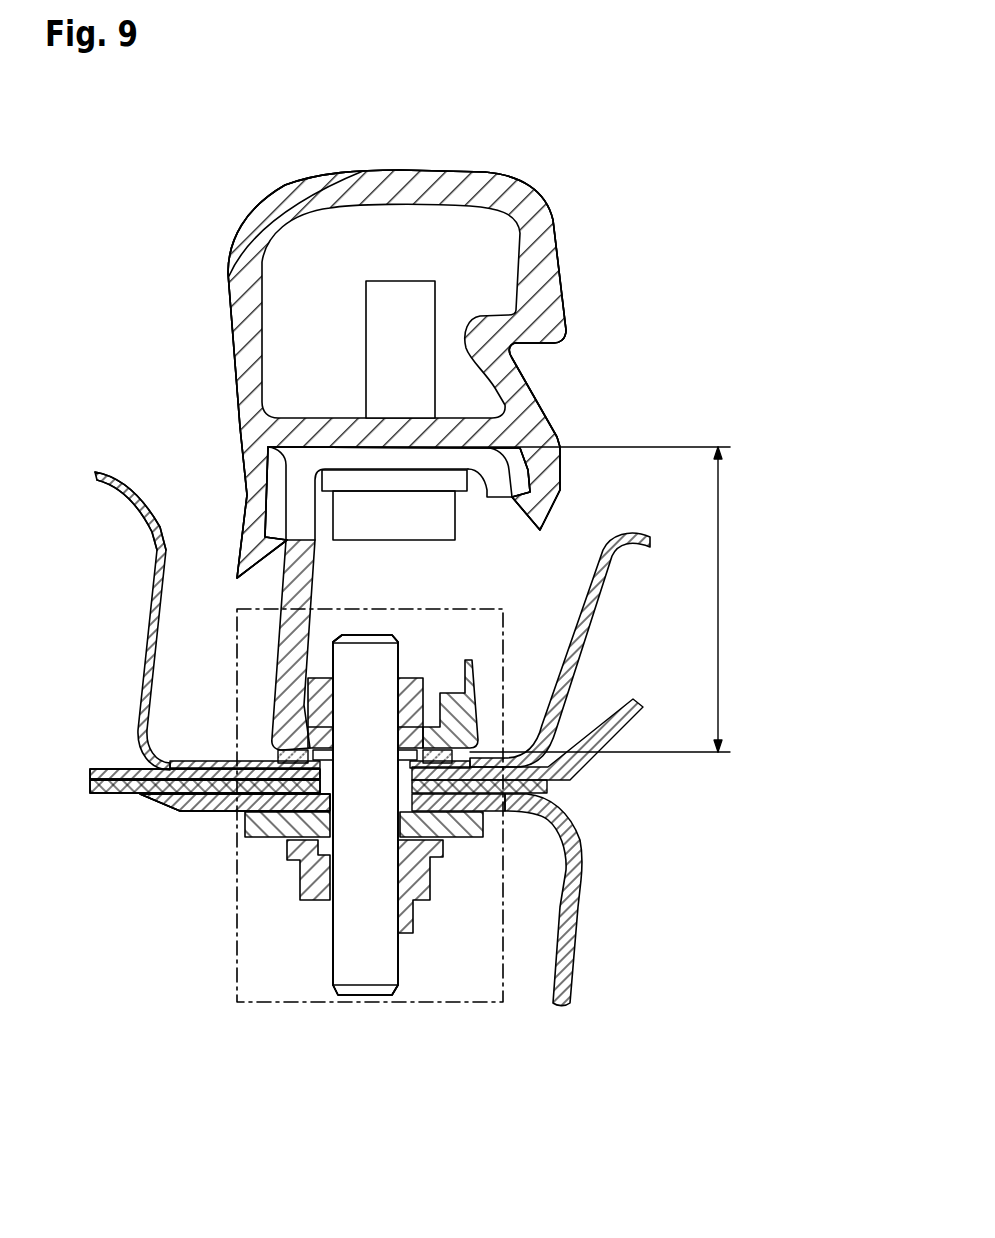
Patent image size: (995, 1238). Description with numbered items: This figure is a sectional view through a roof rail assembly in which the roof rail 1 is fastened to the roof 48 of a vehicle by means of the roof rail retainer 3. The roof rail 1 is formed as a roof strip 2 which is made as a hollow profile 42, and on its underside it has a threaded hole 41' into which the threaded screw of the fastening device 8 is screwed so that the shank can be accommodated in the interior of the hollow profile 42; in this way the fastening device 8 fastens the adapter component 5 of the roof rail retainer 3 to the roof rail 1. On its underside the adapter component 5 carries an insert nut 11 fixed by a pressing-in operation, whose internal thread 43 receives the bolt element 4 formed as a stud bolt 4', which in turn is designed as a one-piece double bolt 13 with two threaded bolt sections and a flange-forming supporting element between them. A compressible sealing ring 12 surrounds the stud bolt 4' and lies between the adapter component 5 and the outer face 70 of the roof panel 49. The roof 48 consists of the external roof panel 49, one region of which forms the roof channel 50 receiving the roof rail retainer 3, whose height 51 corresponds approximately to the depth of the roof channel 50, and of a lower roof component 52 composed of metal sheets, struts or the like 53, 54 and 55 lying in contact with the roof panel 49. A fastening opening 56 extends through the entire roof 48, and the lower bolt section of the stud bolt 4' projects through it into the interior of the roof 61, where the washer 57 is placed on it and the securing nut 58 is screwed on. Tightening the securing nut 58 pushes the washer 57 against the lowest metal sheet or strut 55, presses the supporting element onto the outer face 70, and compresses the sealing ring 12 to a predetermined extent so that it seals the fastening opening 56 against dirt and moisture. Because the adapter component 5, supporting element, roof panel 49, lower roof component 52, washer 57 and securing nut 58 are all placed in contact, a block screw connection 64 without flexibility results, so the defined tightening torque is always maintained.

The roof rail 1 is at (413, 150).
The roof strip 2 is at (497, 197).
The hollow profile 42 is at (403, 344).
The threaded hole 41' is at (260, 292).
The roof 48 is at (155, 478).
The external roof panel 49 is at (152, 532).
The adapter component 5 is at (300, 603).
The roof rail retainer 3 is at (262, 685).
The outer face 70 is at (207, 760).
The lower roof component 52 is at (150, 817).
The metal sheet, strut or the like 53 is at (177, 800).
The metal sheet, strut or the like 54 is at (207, 805).
The metal sheet, strut or the like 55 is at (240, 790).
The fastening opening 56 is at (307, 812).
The washer 57 is at (480, 873).
The securing nut 58 is at (410, 893).
The interior of the roof 61 is at (274, 973).
The bolt element 4 is at (365, 854).
The stud bolt 4' is at (365, 854).
The double bolt 13 is at (360, 662).
The internal thread 43 is at (400, 700).
The insert nut 11 is at (425, 690).
The fastening device 8 is at (470, 510).
The roof channel 50 is at (560, 565).
The height 51 is at (720, 611).
The sealing ring 12 is at (547, 792).
The block screw connection 64 is at (508, 853).